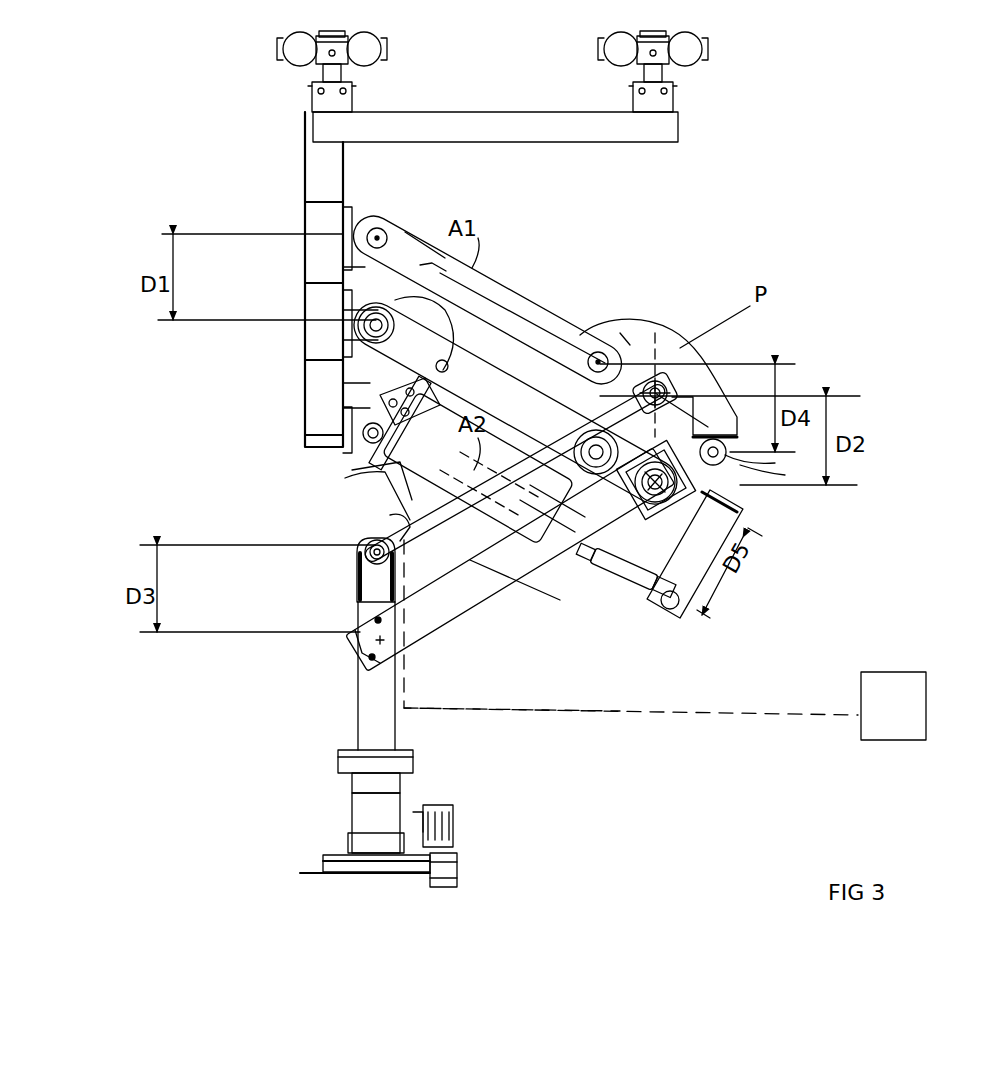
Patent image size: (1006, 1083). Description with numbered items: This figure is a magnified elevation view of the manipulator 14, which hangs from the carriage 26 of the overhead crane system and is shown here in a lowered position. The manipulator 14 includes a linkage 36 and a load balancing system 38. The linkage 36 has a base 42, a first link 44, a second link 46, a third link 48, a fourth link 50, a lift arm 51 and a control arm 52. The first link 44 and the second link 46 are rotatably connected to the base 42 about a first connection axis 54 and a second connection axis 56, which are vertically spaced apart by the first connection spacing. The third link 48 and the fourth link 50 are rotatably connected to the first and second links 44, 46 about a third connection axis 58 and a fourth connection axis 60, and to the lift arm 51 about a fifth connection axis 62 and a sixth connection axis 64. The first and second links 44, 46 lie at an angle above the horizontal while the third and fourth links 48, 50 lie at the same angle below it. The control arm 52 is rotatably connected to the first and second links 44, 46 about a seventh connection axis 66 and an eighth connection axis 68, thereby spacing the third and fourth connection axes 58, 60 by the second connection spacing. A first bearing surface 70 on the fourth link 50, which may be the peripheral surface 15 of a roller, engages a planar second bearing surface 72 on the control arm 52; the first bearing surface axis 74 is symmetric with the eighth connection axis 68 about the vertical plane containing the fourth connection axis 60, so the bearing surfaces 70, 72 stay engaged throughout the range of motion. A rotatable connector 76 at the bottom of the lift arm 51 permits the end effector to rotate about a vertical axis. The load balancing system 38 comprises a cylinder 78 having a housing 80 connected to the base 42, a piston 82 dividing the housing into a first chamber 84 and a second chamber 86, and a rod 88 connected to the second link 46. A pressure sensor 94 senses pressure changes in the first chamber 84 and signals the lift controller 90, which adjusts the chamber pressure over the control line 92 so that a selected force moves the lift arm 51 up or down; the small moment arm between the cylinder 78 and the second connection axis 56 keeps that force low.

The manipulator 14 is at (902, 270).
The workpiece support 15 is at (765, 464).
The carriage 26 is at (680, 118).
The linkage 36 is at (644, 282).
The load balancing system 38 is at (375, 498).
The base 42 is at (305, 250).
The first link 44 is at (510, 282).
The second link 46 is at (525, 318).
The third link 48 is at (470, 547).
The fourth link 50 is at (443, 572).
The lift arm 51 is at (356, 690).
The control arm 52 is at (573, 342).
The first connection axis 54 is at (377, 238).
The second connection axis 56 is at (376, 325).
The third connection axis 58 is at (688, 384).
The fourth connection axis 60 is at (640, 580).
The fifth connection axis 62 is at (360, 551).
The sixth connection axis 64 is at (364, 656).
The seventh connection axis 66 is at (648, 326).
The eighth connection axis 68 is at (592, 582).
The first bearing surface 70 is at (735, 460).
The second bearing surface 72 is at (726, 448).
The first bearing surface axis 74 is at (698, 484).
The rotatable connector 76 is at (325, 862).
The cylinder 78 is at (368, 488).
The housing 80 is at (395, 524).
The piston 82 is at (345, 455).
The first chamber 84 is at (450, 422).
The second chamber 86 is at (493, 525).
The rod 88 is at (612, 600).
The lift controller 90 is at (926, 677).
The control line 92 is at (512, 772).
The pressure sensor 94 is at (468, 600).